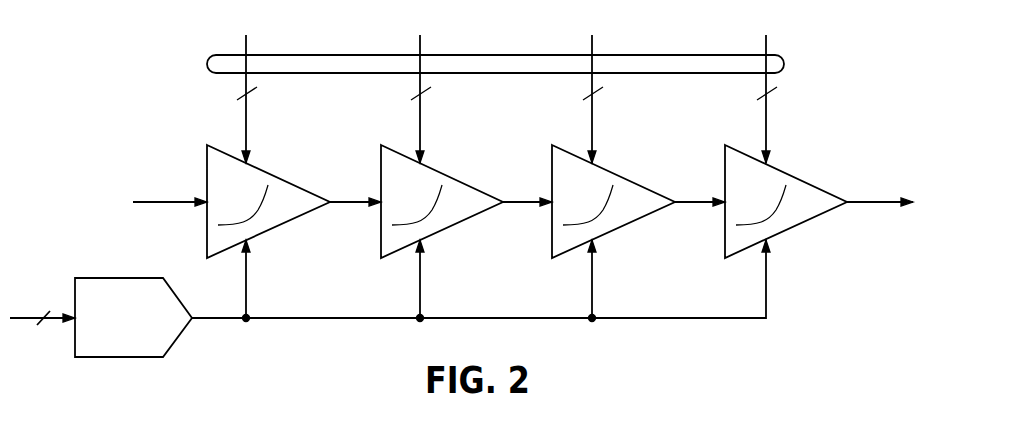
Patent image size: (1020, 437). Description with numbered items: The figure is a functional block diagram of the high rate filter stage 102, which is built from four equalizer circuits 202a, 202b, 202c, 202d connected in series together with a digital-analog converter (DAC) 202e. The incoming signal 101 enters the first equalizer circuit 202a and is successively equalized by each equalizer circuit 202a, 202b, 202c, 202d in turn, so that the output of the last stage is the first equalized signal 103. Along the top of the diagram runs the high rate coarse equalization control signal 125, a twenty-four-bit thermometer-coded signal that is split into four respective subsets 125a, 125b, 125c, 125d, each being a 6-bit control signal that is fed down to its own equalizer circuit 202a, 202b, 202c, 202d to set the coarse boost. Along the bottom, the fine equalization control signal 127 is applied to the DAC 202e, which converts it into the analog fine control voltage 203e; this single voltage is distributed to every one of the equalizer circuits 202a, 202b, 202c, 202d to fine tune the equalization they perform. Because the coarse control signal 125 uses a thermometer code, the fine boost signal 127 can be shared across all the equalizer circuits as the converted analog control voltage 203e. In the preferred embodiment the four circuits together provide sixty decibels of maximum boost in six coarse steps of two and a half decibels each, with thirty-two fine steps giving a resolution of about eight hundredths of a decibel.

The incoming signal 101 is at (172, 200).
The high rate filter stage 102 is at (806, 298).
The first equalized signal 103 is at (872, 200).
The high rate coarse equalization control signal 125 is at (208, 61).
The subset of the high rate coarse equalization control signal 125a is at (245, 43).
The subset of the high rate coarse equalization control signal 125b is at (419, 43).
The subset of the high rate coarse equalization control signal 125c is at (591, 43).
The subset of the high rate coarse equalization control signal 125d is at (765, 43).
The 6-bit control signal width 6 is at (516, 94).
The equalizer circuit 202a is at (285, 180).
The equalizer circuit 202b is at (459, 181).
The equalizer circuit 202c is at (631, 181).
The equalizer circuit 202d is at (803, 181).
The digital-analog converter (DAC) 202e is at (135, 358).
The analog control voltage Vfine 203e is at (220, 322).
The fine equalization control signal 127 is at (22, 312).